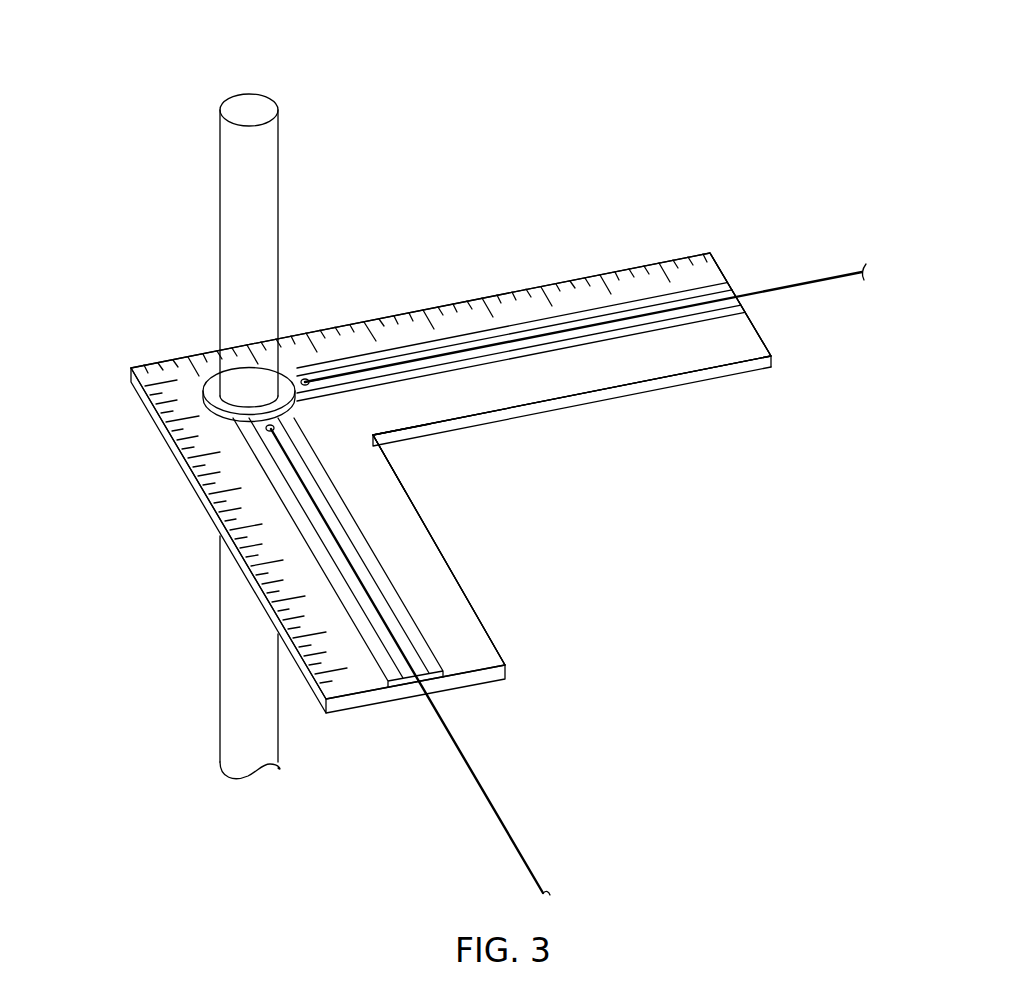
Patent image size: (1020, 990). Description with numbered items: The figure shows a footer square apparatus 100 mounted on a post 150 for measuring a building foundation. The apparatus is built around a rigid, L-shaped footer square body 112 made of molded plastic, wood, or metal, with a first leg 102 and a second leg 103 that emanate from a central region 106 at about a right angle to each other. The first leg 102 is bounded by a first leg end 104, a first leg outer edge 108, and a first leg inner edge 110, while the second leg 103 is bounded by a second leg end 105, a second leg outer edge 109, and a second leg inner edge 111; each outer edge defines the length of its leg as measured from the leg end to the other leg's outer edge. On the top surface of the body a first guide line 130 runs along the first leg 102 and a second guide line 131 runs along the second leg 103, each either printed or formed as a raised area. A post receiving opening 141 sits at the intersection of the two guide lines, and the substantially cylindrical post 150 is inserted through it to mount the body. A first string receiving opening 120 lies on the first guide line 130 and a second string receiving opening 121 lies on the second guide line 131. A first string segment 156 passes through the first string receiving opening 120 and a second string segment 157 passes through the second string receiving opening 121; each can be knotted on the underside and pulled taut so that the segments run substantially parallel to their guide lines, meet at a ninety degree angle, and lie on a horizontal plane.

The footer square apparatus 100 is at (469, 451).
The first leg 102 is at (477, 303).
The second leg 103 is at (343, 502).
The first leg end 104 is at (761, 330).
The second leg end 105 is at (468, 686).
The central region 106 is at (199, 495).
The first leg outer edge 108 is at (475, 299).
The second leg outer edge 109 is at (272, 617).
The first leg inner edge 110 is at (622, 394).
The second leg inner edge 111 is at (447, 561).
The footer square body 112 is at (455, 457).
The first string receiving opening 120 is at (305, 374).
The second string receiving opening 121 is at (281, 429).
The first guide line 130 is at (521, 353).
The second guide line 131 is at (348, 552).
The post receiving opening 141 is at (211, 398).
The post 150 is at (272, 159).
The first string segment 156 is at (799, 282).
The second string segment 157 is at (497, 808).